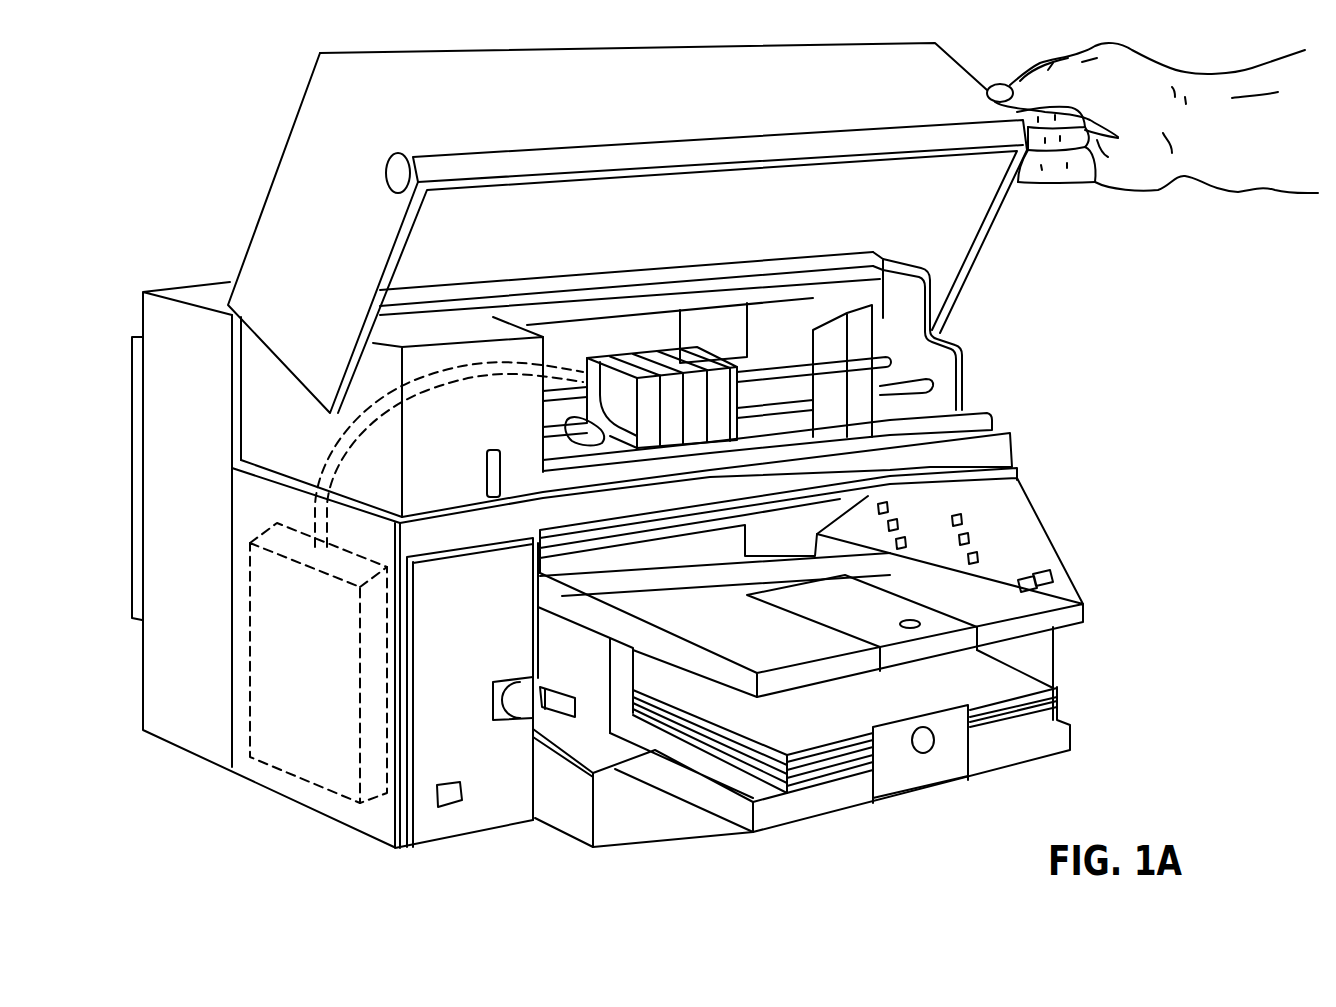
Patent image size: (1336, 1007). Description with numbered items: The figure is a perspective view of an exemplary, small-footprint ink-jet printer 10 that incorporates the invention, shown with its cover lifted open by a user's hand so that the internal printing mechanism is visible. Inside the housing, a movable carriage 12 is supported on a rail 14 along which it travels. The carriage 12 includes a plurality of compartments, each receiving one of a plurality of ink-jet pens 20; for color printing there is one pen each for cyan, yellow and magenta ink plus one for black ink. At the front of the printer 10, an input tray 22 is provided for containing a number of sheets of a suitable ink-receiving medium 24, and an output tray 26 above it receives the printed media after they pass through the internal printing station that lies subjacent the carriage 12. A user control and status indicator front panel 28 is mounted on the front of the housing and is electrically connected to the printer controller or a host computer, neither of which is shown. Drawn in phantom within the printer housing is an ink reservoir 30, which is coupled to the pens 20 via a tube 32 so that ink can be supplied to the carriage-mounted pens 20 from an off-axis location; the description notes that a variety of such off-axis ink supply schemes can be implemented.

The ink-jet printer 10 is at (1090, 448).
The carriage 12 is at (572, 425).
The rail 14 is at (930, 378).
The ink-jet pens 20 is at (631, 357).
The input tray 22 is at (733, 803).
The ink-receiving medium 24 is at (1057, 700).
The output tray 26 is at (1087, 618).
The user control and status indicator front panel 28 is at (1013, 532).
The ink reservoir 30 is at (307, 743).
The tube 32 is at (313, 506).